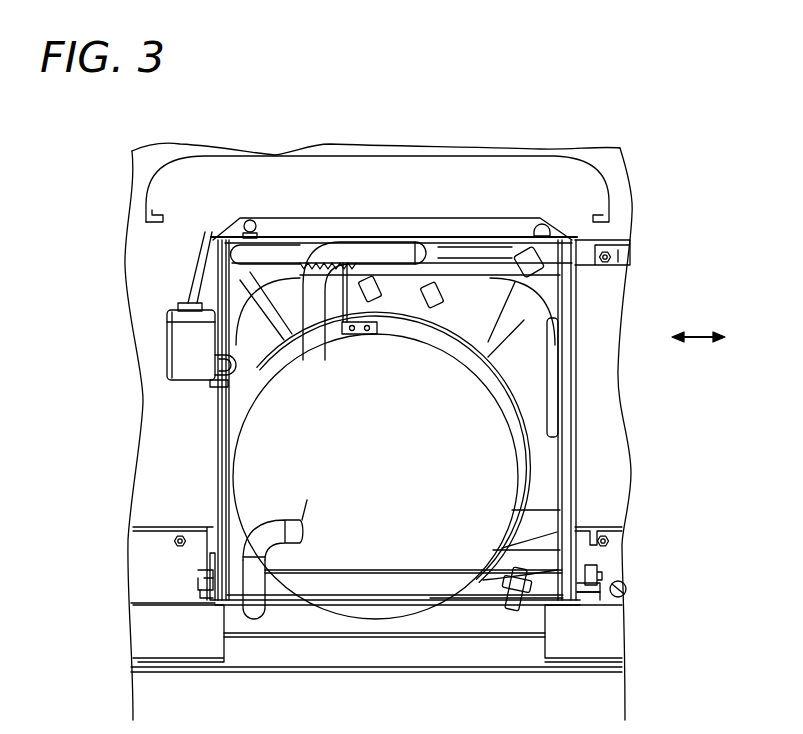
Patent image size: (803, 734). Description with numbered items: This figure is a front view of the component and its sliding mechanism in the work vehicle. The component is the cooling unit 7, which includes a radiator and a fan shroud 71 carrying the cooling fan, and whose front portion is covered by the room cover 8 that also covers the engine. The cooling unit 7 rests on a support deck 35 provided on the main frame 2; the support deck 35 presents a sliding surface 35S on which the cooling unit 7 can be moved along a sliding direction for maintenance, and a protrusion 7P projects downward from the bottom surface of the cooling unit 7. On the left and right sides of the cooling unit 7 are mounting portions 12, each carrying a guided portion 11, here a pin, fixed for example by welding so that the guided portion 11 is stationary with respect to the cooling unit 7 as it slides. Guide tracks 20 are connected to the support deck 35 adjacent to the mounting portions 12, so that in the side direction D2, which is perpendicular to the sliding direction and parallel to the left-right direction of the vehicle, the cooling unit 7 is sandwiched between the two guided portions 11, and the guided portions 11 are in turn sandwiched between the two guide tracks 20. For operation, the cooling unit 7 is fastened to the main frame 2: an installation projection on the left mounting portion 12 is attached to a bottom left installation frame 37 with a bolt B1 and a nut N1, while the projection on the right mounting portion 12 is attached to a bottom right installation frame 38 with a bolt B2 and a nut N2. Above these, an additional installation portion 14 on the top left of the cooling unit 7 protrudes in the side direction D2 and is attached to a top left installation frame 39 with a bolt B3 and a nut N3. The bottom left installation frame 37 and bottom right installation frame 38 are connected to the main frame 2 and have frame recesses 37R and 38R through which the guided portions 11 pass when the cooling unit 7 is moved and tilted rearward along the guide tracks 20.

The main frame 2 is at (483, 660).
The cooling unit (component) 7 is at (582, 401).
The protrusion 7P is at (337, 607).
The room cover 8 is at (596, 158).
The guided portion 11 is at (199, 582).
The mounting portion 12 is at (205, 527).
The additional installation portion 14 is at (583, 243).
The guide track 20 is at (197, 596).
The support deck 35 is at (575, 617).
The sliding surface 35S is at (130, 594).
The bottom left installation frame 37 is at (594, 600).
The frame recess 37R is at (599, 575).
The bottom right installation frame 38 is at (163, 595).
The frame recess 38R is at (200, 577).
The top left installation frame 39 is at (623, 261).
The fan shroud 71 is at (255, 455).
The bolt B1 is at (620, 545).
The bolt B2 is at (196, 573).
The bolt B3 is at (610, 259).
The nut N1 is at (618, 542).
The nut N2 is at (174, 541).
The nut N3 is at (612, 256).
The side direction D2 is at (700, 333).